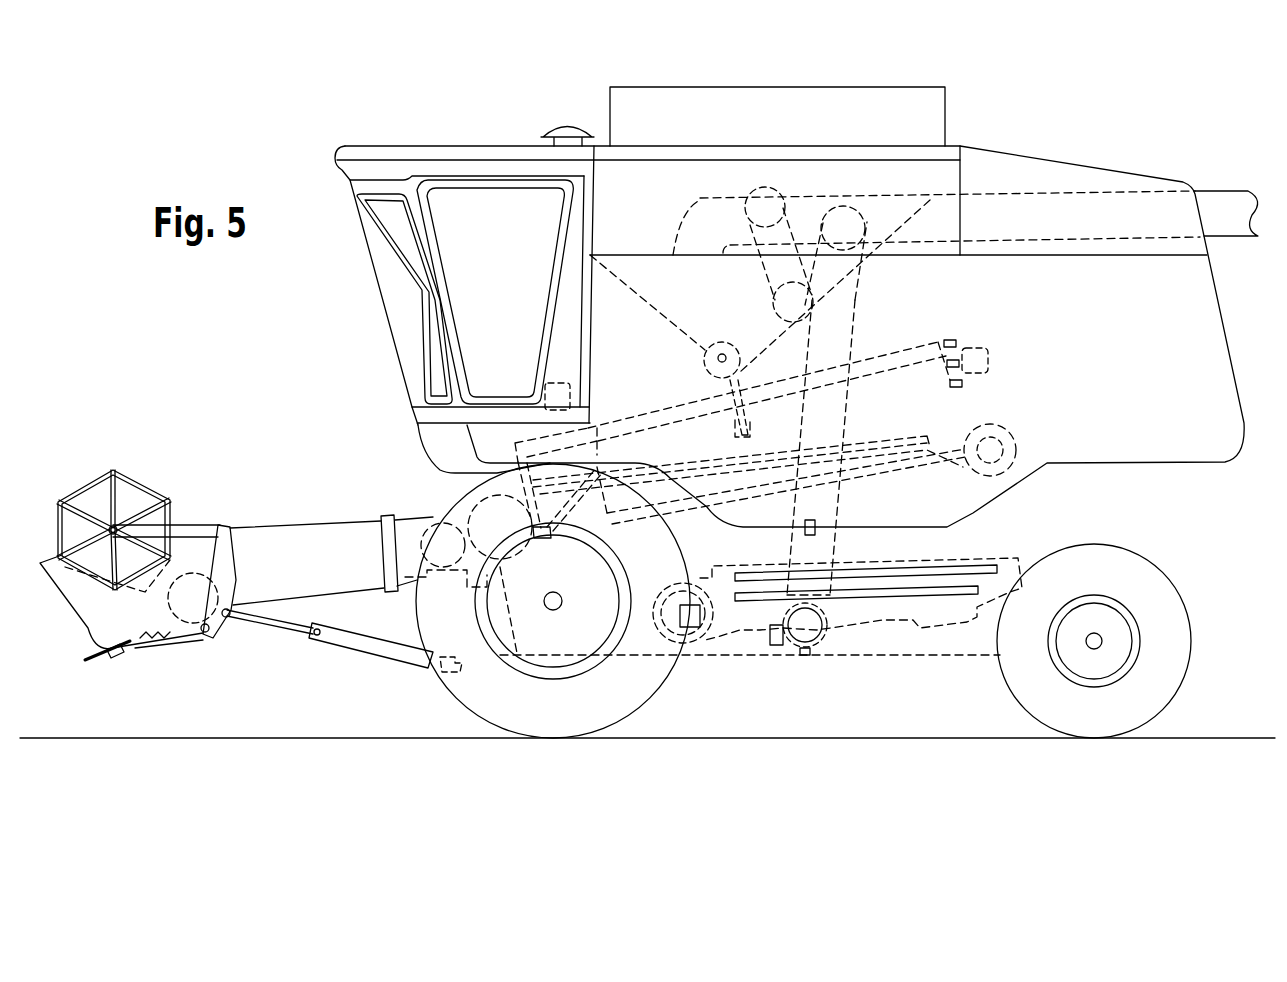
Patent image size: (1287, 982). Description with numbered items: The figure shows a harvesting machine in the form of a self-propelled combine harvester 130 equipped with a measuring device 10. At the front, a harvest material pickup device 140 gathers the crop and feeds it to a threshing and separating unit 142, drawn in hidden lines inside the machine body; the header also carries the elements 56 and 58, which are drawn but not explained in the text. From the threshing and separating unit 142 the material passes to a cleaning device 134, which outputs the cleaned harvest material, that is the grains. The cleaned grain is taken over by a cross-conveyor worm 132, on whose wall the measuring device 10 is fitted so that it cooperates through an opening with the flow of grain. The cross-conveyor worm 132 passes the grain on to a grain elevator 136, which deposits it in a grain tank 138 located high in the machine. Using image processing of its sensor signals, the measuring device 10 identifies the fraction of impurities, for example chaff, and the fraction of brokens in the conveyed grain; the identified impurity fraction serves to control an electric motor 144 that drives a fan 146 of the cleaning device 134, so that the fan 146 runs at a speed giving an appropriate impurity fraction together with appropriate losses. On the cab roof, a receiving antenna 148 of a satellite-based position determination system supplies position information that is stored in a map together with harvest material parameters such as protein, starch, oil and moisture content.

The self-propelled combine harvester 130 is at (404, 100).
The receiving antenna 148 is at (567, 128).
The grain tank 138 is at (737, 314).
The threshing and separating unit 142 is at (880, 380).
The grain elevator 136 is at (810, 547).
The cleaning device 134 is at (947, 607).
The cross-conveyor worm 132 is at (797, 637).
The measuring device 10 is at (770, 646).
The fan 146 is at (660, 632).
The electric motor 144 is at (690, 618).
The reel / cutterbar sensor 56 is at (133, 632).
The header auger 58 is at (157, 630).
The harvest material pickup device 140 is at (209, 655).